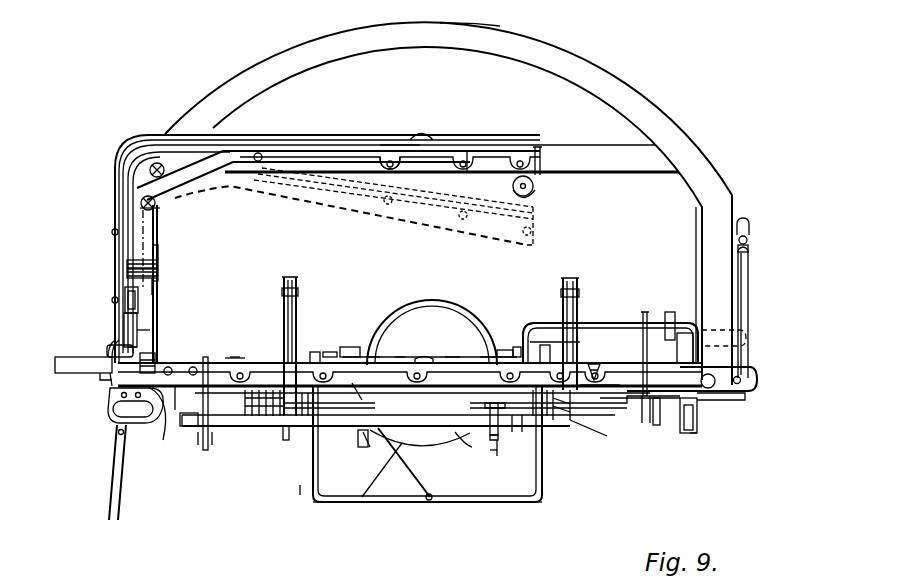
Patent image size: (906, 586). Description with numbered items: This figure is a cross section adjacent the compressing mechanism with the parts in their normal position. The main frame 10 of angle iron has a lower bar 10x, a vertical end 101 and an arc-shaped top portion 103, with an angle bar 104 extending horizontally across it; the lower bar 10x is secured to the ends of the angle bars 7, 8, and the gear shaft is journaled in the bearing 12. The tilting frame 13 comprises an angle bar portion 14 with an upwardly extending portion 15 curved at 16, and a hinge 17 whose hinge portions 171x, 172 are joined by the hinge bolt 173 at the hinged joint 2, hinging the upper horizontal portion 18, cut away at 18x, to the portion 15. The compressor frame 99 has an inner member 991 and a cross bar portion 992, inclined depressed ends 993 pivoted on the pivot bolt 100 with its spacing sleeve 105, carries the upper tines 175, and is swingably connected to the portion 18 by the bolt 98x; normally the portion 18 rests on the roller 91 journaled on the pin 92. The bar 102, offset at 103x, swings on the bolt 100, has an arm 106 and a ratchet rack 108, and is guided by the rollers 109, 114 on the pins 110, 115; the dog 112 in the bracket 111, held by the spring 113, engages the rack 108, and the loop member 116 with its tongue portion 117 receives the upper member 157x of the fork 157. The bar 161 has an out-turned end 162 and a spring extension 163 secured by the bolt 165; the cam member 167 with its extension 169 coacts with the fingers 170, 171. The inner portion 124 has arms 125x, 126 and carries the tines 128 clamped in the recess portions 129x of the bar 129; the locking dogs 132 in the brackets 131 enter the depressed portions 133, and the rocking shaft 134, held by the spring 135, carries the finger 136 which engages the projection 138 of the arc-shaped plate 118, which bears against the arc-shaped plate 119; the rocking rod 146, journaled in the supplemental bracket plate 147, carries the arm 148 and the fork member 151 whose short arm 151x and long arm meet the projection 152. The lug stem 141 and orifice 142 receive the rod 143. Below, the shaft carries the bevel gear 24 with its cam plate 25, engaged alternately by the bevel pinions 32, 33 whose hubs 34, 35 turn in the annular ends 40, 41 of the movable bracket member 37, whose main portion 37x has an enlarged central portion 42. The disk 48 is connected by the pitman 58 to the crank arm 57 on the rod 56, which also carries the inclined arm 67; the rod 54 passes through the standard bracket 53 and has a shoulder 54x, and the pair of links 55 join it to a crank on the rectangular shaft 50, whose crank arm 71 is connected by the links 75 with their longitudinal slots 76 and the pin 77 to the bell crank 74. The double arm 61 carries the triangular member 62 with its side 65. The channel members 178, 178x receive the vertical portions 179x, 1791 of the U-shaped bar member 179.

The frame arch 10 is at (733, 197).
The arch outer member 103 is at (486, 24).
The arch side member 101 is at (733, 217).
The upper rail 104 is at (595, 145).
The lower hood rail 99 is at (620, 174).
The strap 75 is at (749, 287).
The pivot pin 74 is at (748, 241).
The bracket 77 is at (751, 228).
The bracket plate 76 is at (751, 250).
The hidden link 55 is at (740, 341).
The pivot 50 is at (715, 380).
The pin 71 is at (741, 382).
The frame bracket 10x is at (730, 393).
The main rail 7 is at (698, 423).
The bracket 58 is at (698, 400).
The clamp 57 is at (697, 433).
The clip 56 is at (660, 420).
The rod 129x is at (646, 425).
The shelf 14 is at (592, 403).
The post 131 is at (575, 436).
The post 133 is at (607, 436).
The leg 134 is at (545, 432).
The leg 178 is at (548, 425).
The lower frame 179 is at (433, 505).
The lower frame corner 1791 is at (541, 508).
The lower frame corner 179x is at (312, 503).
The leg 178x is at (305, 495).
The lower bar 8 is at (246, 427).
The rod 129 is at (210, 450).
The bracket 147 is at (204, 445).
The bracket 148 is at (197, 428).
The pin 67 is at (285, 440).
The clip 135 is at (303, 430).
The link 152 is at (366, 432).
The brace 138 is at (400, 445).
The drum bottom 118 is at (436, 442).
The drum edge 119 is at (460, 447).
The pin 136 is at (494, 450).
The pin end 151x is at (492, 456).
The pin 151 is at (500, 456).
The post 146 is at (517, 428).
The dome 24 is at (443, 305).
The inner dome 25 is at (392, 335).
The plate 12 is at (393, 335).
The boss 143 is at (447, 344).
The plate 124 is at (400, 355).
The plate end 37x is at (372, 350).
The plate 42 is at (450, 357).
The plate 37 is at (487, 355).
The block 33 is at (504, 346).
The block 41 is at (522, 345).
The block 32 is at (343, 347).
The block 40 is at (330, 352).
The block 34 is at (316, 356).
The tube 61 is at (290, 280).
The clamp 62 is at (298, 292).
The frame 54 is at (610, 325).
The frame corner 35 is at (533, 326).
The frame corner 54x is at (697, 322).
The bar 65 is at (571, 346).
The block 132 is at (558, 372).
The wedge 125x is at (593, 372).
The bar 128 is at (614, 384).
The block 13 is at (607, 388).
The rod 53 is at (644, 312).
The bracket 48 is at (684, 330).
The hood 17 is at (125, 158).
The hood side 171x is at (117, 168).
The hood top 173 is at (155, 135).
The pivot 2 is at (168, 150).
The hood rail 172 is at (181, 143).
The post 16 is at (115, 187).
The arm 993 is at (243, 150).
The rail 18 is at (350, 142).
The rail dip 175 is at (389, 157).
The rail 163 is at (397, 140).
The knob 165 is at (428, 134).
The rail stub 18x is at (480, 150).
The bracket 991 is at (493, 152).
The bracket 992 is at (541, 161).
The rail 98x is at (488, 175).
The pulley 92 is at (534, 188).
The pulley bracket 91 is at (528, 197).
The hidden arm 105 is at (252, 197).
The pivot 100 is at (158, 205).
The bracket 103x is at (160, 213).
The strip 15 is at (129, 243).
The block 106 is at (158, 256).
The block 110 is at (158, 270).
The strip 109 is at (157, 288).
The post 161 is at (115, 278).
The bracket 111 is at (139, 312).
The bracket 113 is at (148, 344).
The bracket 112 is at (187, 347).
The bracket 108 is at (136, 345).
The bar 141 is at (235, 363).
The bar 126 is at (236, 362).
The block 114 is at (157, 360).
The bracket 162 is at (110, 347).
The bracket 170 is at (108, 352).
The bar 171 is at (68, 362).
The clip 167 is at (104, 371).
The clip 169 is at (110, 374).
The lever 117 is at (107, 382).
The slot 115 is at (110, 400).
The pin 116 is at (120, 426).
The rod 157 is at (123, 458).
The rod 157x is at (122, 482).
The arm 142 is at (193, 380).
The curved bracket 102 is at (163, 436).